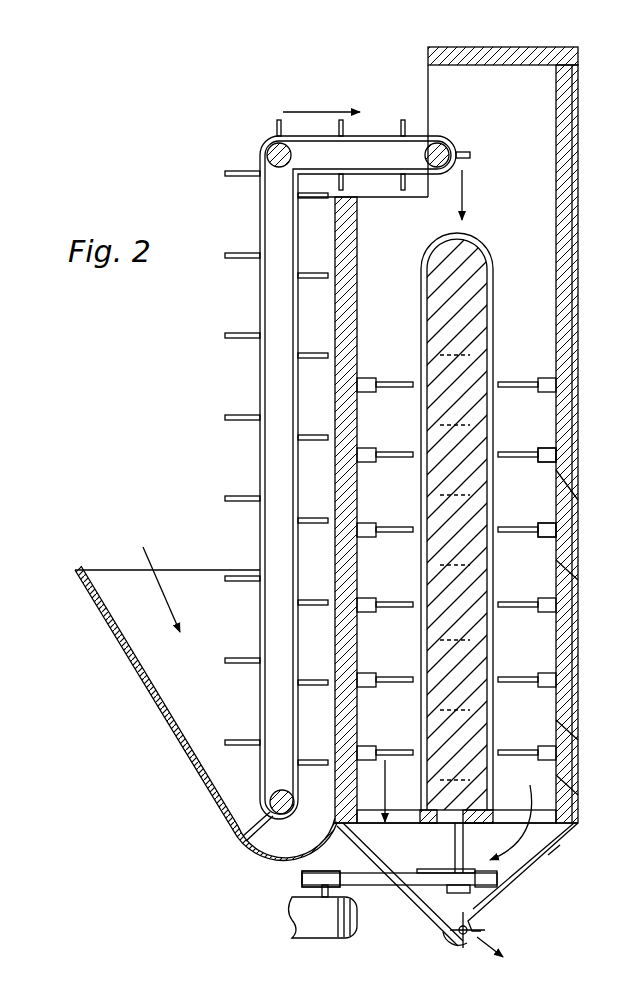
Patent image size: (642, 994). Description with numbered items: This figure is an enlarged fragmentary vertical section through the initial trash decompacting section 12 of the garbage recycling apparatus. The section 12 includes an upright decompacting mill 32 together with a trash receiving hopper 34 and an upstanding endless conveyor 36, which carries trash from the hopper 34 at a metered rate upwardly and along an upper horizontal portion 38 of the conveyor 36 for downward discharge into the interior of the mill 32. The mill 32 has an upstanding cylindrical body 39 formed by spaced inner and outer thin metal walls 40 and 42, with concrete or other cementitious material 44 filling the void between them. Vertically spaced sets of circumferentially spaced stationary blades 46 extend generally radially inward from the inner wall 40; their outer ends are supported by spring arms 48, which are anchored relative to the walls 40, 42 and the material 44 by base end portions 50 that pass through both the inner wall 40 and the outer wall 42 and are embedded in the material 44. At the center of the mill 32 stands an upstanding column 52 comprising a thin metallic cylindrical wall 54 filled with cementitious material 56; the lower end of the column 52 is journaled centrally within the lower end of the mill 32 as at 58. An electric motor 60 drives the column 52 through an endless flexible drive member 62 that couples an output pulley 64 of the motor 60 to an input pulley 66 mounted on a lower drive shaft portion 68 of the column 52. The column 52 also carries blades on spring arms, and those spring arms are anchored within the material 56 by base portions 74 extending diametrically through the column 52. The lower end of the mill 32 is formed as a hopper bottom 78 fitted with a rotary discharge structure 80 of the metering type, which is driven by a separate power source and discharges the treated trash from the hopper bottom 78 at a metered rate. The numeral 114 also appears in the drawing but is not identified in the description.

The decompacting section 12 is at (466, 435).
The upright decompacting mill 32 is at (578, 640).
The trash receiving hopper 34 is at (175, 737).
The upstanding endless conveyor 36 is at (260, 384).
The upper horizontal portion 38 is at (380, 135).
The upstanding cylindrical body 39 is at (574, 432).
The inner wall 40 is at (548, 730).
The outer wall 42 is at (580, 786).
The cementitious material 44 is at (572, 570).
The stationary blades 46 is at (516, 534).
The spring arms 48 is at (541, 526).
The base end portions 50 is at (576, 486).
The center upstanding column 52 is at (451, 521).
The thin metallic cylindrical wall 54 is at (488, 375).
The cementitious material 56 is at (442, 325).
The journal 58 is at (528, 854).
The electric motor 60 is at (300, 912).
The endless flexible drive member 62 is at (379, 880).
The output pulley 64 is at (305, 870).
The input pulley 66 is at (497, 885).
The lower drive shaft portion 68 is at (460, 835).
The base portions 74 is at (450, 502).
The hopper bottom 78 is at (568, 836).
The rotary discharge structure 80 is at (486, 918).
The wall element 114 is at (641, 448).